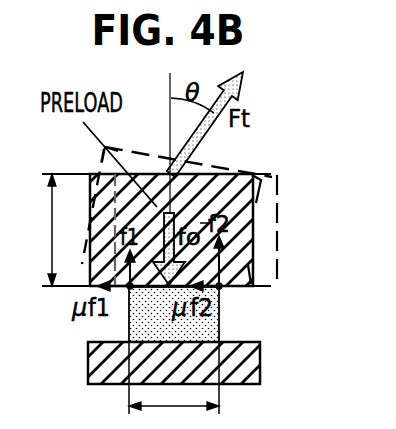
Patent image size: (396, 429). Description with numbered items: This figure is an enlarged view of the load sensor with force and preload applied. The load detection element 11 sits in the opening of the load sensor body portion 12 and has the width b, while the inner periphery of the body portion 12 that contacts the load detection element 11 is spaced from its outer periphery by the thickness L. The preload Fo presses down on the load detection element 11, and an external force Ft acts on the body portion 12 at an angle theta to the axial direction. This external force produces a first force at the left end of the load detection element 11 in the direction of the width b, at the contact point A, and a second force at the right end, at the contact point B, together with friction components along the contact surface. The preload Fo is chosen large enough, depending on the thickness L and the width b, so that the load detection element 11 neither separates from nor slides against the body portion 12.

The load detection element 11 is at (130, 325).
The load sensor body portion 12 is at (252, 286).
The contact point A is at (138, 302).
The contact point B is at (229, 302).
The thickness L is at (44, 230).
The width b is at (174, 378).